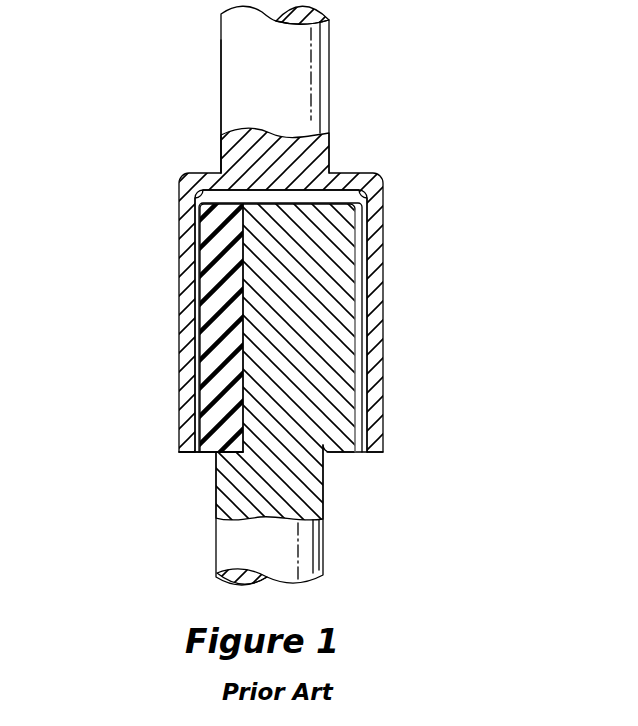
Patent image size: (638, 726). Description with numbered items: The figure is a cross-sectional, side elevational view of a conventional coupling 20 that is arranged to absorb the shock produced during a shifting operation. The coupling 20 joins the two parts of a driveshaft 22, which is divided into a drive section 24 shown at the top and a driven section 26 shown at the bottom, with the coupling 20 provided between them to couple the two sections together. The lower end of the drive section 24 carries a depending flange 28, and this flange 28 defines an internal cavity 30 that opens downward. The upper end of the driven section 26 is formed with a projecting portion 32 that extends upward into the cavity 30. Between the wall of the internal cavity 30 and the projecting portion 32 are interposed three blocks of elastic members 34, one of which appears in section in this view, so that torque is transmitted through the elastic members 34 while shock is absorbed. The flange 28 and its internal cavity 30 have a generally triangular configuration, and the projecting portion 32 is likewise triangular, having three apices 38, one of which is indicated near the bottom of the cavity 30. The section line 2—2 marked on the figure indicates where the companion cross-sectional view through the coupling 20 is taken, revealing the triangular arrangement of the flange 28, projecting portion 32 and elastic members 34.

The section line 2— 2 is at (160, 300).
The coupling 20 is at (179, 368).
The driveshaft 22 is at (334, 58).
The drive section 24 is at (221, 91).
The driven section 26 is at (216, 548).
The depending flange 28 is at (386, 412).
The internal cavity 30 is at (357, 203).
The projecting portion 32 is at (343, 344).
The elastic members 34 is at (203, 430).
The apices 38 is at (358, 448).